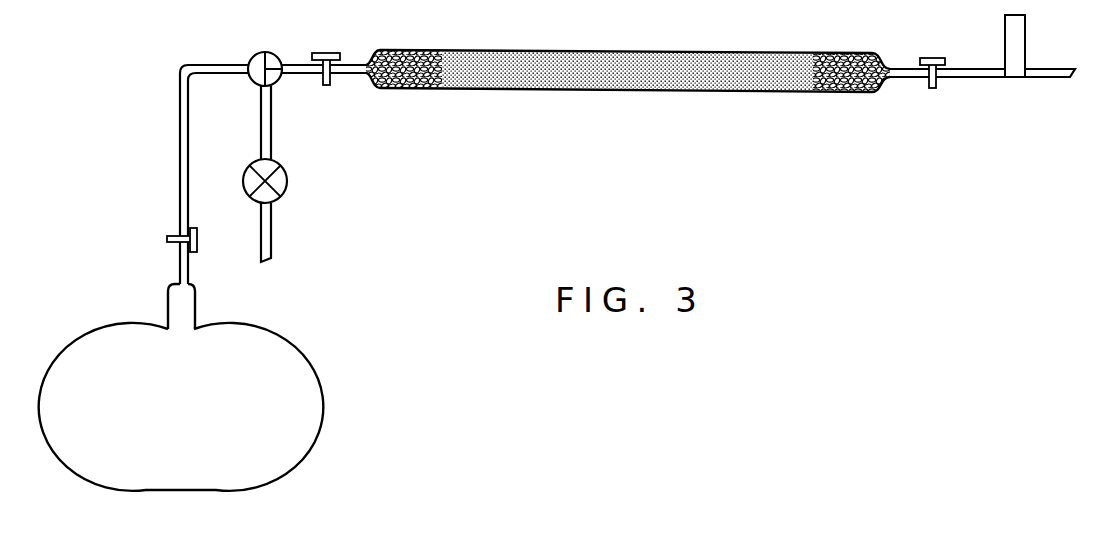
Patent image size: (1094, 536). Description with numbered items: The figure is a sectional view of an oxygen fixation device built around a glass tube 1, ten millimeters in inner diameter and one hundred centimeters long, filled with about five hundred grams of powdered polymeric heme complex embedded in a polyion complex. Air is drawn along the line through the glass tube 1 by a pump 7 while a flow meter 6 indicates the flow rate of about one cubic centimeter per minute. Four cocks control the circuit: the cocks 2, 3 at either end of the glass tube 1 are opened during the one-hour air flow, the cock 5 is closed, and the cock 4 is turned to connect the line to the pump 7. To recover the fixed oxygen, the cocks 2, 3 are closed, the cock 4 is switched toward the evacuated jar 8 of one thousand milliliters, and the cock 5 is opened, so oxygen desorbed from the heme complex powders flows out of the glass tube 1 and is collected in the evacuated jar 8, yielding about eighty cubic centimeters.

The glass tube 1 is at (565, 50).
The cock 2 is at (932, 58).
The cock 3 is at (327, 53).
The cock 4 is at (265, 52).
The cock 5 is at (198, 239).
The flow meter 6 is at (1025, 55).
The pump 7 is at (287, 183).
The evacuated jar 8 is at (274, 388).